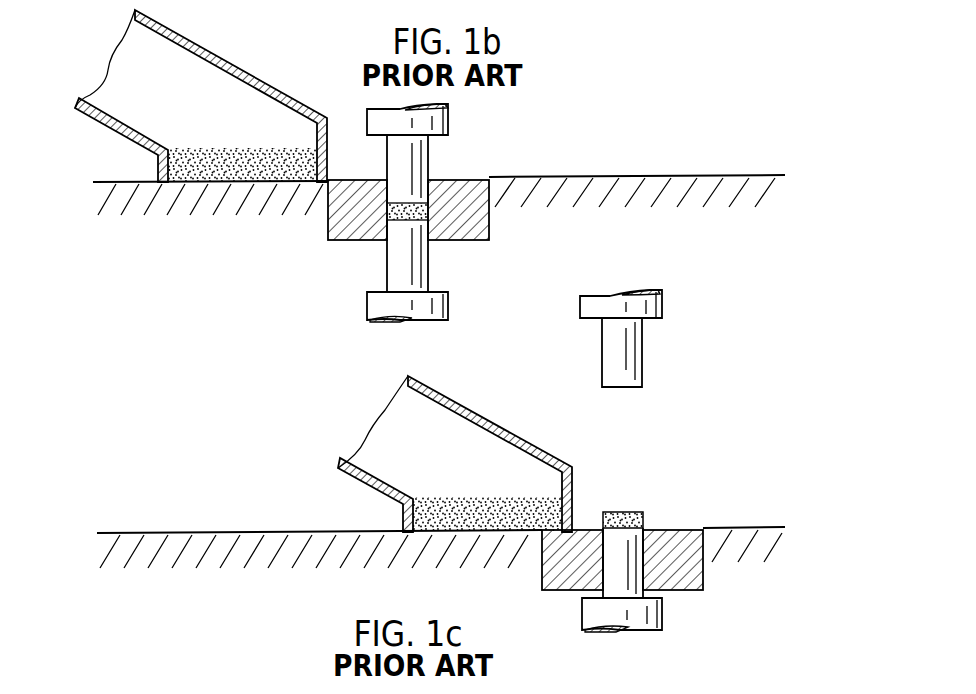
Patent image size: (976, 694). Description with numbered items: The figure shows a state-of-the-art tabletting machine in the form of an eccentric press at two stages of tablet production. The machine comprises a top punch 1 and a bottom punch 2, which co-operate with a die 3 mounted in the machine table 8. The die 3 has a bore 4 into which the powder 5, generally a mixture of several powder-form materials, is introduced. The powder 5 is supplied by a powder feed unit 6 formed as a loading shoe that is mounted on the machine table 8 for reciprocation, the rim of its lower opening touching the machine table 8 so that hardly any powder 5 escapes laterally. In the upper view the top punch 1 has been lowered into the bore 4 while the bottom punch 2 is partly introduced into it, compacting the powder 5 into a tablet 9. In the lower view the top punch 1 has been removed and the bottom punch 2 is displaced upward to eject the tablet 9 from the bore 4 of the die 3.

In FIG. 1b, the top punch 1 is at (428, 170).
In FIG. 1c, the top punch 1 is at (632, 352).
In FIG. 1b, the bottom punch 2 is at (392, 272).
In FIG. 1c, the bottom punch 2 is at (610, 572).
In FIG. 1b, the die 3 is at (332, 232).
In FIG. 1c, the die 3 is at (550, 572).
In FIG. 1b, the bore 4 is at (433, 215).
In FIG. 1c, the bore 4 is at (646, 560).
In FIG. 1b, the powder 5 is at (300, 155).
In FIG. 1c, the powder 5 is at (537, 506).
In FIG. 1b, the powder feed unit 6 is at (240, 70).
In FIG. 1c, the powder feed unit 6 is at (350, 482).
In FIG. 1b, the machine table 8 is at (256, 195).
In FIG. 1c, the machine table 8 is at (465, 545).
In FIG. 1b, the tablet 9 is at (386, 205).
In FIG. 1c, the tablet 9 is at (643, 516).